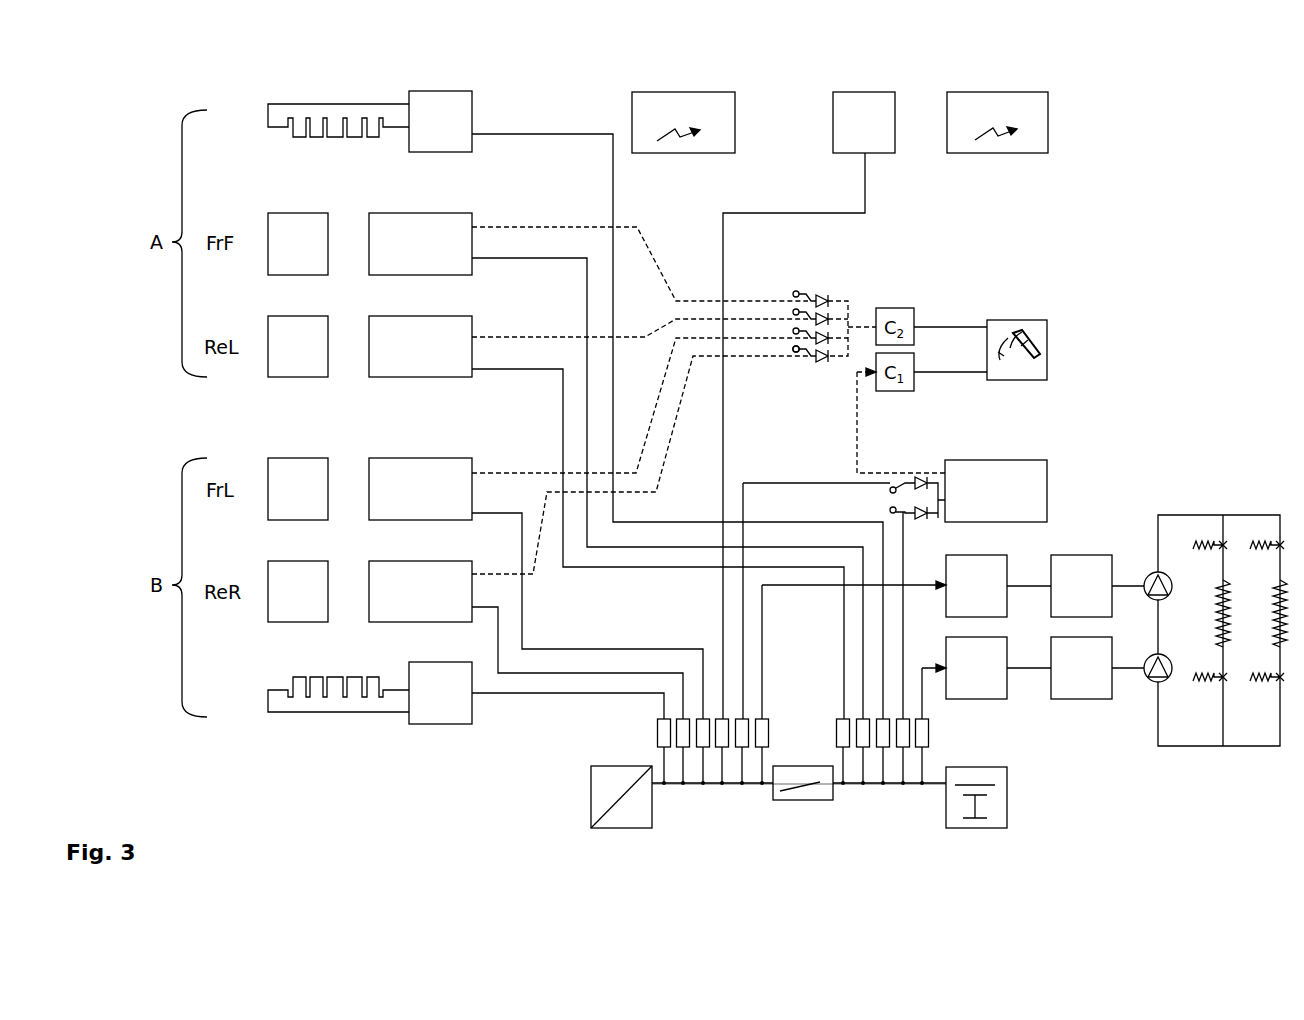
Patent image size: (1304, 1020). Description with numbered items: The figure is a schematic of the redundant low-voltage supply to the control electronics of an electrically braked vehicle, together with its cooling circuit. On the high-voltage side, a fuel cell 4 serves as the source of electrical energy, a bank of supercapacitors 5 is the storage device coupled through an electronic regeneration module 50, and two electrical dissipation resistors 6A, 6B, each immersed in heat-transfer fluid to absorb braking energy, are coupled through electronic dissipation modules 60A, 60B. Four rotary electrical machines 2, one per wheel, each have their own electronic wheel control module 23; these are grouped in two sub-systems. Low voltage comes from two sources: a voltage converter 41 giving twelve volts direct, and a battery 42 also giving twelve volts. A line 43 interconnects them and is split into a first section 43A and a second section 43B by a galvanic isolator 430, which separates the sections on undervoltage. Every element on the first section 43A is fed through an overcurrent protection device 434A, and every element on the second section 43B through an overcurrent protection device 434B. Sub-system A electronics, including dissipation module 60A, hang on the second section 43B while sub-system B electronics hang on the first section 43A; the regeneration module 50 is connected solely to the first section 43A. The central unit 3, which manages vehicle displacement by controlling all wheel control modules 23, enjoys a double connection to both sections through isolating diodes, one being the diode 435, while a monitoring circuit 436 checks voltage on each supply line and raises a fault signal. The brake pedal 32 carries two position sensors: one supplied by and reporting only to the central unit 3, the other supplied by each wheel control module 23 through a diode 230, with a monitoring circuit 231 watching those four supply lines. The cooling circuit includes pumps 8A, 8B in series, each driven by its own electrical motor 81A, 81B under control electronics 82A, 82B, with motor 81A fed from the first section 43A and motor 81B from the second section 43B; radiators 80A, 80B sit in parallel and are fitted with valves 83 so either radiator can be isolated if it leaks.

The rotary electrical machine 2 is at (300, 213).
The electronic wheel control module 23 is at (420, 213).
The electrical dissipation resistor 6A is at (355, 104).
The electrical dissipation resistor 6B is at (350, 712).
The electronic dissipation module 60A is at (440, 91).
The electronic dissipation module 60B is at (440, 724).
The fuel cell 4 is at (683, 92).
The electronic regeneration module 50 is at (865, 92).
The bank of supercapacitors 5 is at (997, 92).
The diode 230 is at (813, 287).
The voltage monitoring circuit 231 is at (793, 355).
The brake pedal 32 is at (1017, 320).
The central unit 3 is at (1047, 470).
The voltage monitoring circuit 436 is at (892, 487).
The diode 435 is at (917, 480).
The control electronics 82A is at (963, 562).
The control electronics 82B is at (963, 693).
The electrical motor 81A is at (1065, 562).
The electrical motor 81B is at (1065, 693).
The pump 8A is at (1150, 572).
The pump 8B is at (1147, 685).
The valve 83 is at (1260, 540).
The radiator 80A is at (1217, 633).
The radiator 80B is at (1273, 627).
The overcurrent protection device 434A is at (768, 731).
The overcurrent protection device 434B is at (930, 738).
The first section 43A is at (685, 788).
The second section 43B is at (888, 788).
The galvanic isolator 430 is at (803, 801).
The line 43 is at (743, 831).
The voltage converter 41 is at (591, 812).
The battery 42 is at (1007, 800).